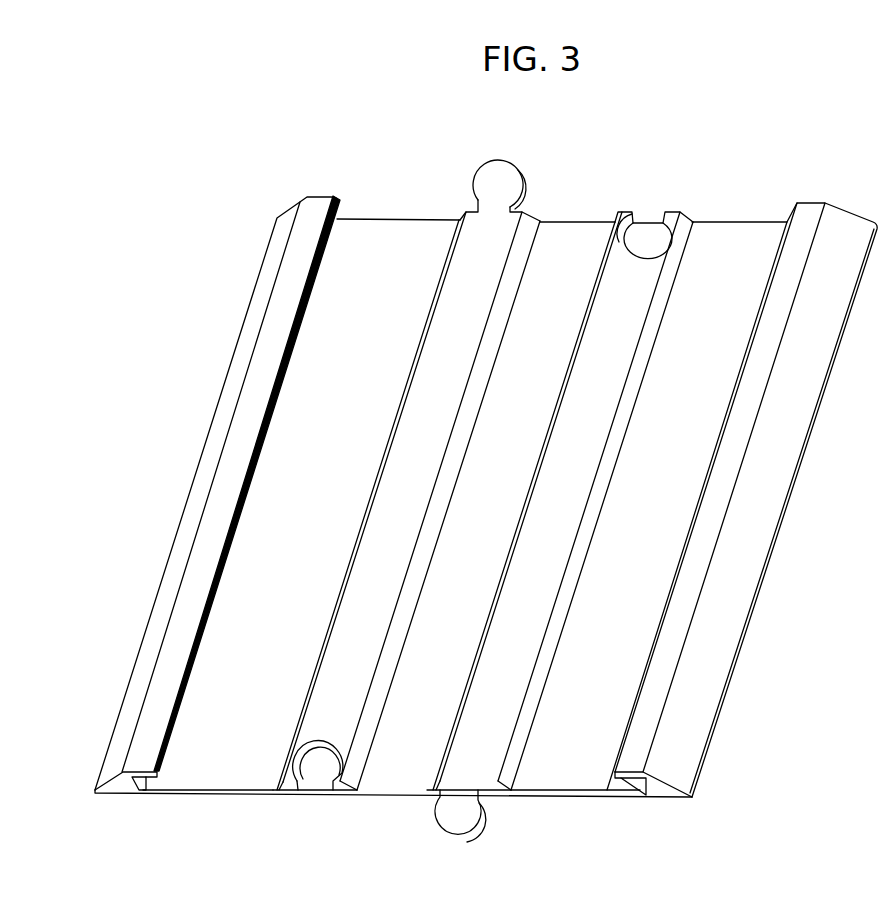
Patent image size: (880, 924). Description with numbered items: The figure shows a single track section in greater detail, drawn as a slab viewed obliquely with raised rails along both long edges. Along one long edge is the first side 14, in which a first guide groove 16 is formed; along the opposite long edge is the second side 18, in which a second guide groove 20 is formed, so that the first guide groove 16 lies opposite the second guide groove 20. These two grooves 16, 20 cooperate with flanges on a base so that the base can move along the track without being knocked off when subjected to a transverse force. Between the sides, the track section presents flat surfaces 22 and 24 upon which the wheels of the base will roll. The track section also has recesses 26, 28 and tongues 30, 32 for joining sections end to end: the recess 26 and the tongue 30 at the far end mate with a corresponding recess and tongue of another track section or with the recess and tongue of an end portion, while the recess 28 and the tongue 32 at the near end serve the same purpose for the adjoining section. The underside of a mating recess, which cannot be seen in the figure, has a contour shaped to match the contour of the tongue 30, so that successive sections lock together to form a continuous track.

The first side 14 is at (125, 718).
The first guide groove 16 is at (146, 783).
The second side 18 is at (690, 750).
The second guide groove 20 is at (634, 783).
The flat surface 22 is at (389, 295).
The flat surface 24 is at (739, 292).
The recess 26 is at (652, 218).
The recess 28 is at (320, 765).
The tongue 30 is at (525, 169).
The tongue 32 is at (470, 833).